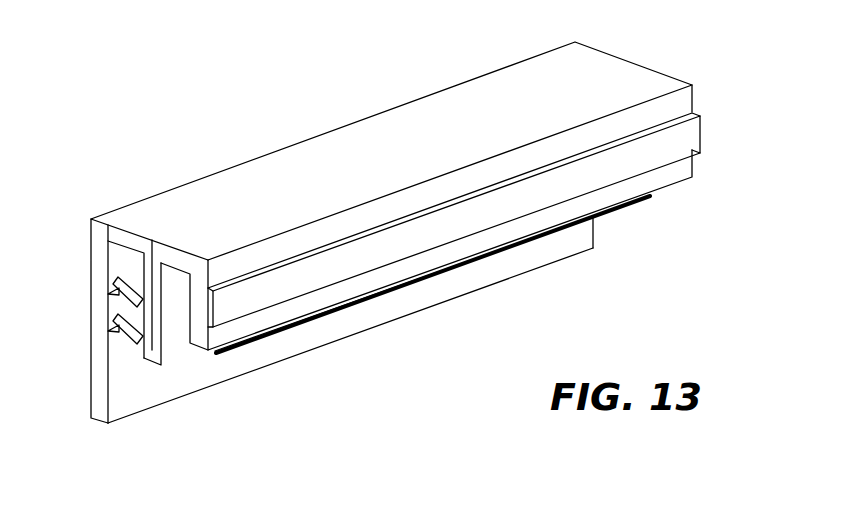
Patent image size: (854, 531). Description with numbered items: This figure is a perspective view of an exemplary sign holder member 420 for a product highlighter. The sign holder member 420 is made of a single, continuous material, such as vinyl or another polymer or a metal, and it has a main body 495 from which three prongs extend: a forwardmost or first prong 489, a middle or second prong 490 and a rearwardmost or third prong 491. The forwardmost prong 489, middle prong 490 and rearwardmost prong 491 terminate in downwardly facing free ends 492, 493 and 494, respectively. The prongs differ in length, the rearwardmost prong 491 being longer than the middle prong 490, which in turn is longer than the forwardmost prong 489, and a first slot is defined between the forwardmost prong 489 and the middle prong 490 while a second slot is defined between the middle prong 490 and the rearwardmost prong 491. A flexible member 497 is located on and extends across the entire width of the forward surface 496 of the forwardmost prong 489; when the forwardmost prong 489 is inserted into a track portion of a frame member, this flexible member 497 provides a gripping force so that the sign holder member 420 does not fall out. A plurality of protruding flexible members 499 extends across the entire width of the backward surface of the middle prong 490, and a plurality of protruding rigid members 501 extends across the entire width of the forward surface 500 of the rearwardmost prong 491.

The sign holder member 420 is at (178, 124).
The forwardmost prong 489 is at (200, 338).
The middle prong 490 is at (157, 350).
The rearwardmost prong 491 is at (100, 404).
The free end 492 is at (680, 178).
The free end 493 is at (392, 287).
The free end 494 is at (535, 270).
The main body 495 is at (408, 135).
The forward surface 496 is at (670, 108).
The flexible member 497 is at (687, 138).
The protruding flexible members 499 is at (137, 316).
The forward surface 500 is at (140, 395).
The protruding rigid members 501 is at (108, 338).